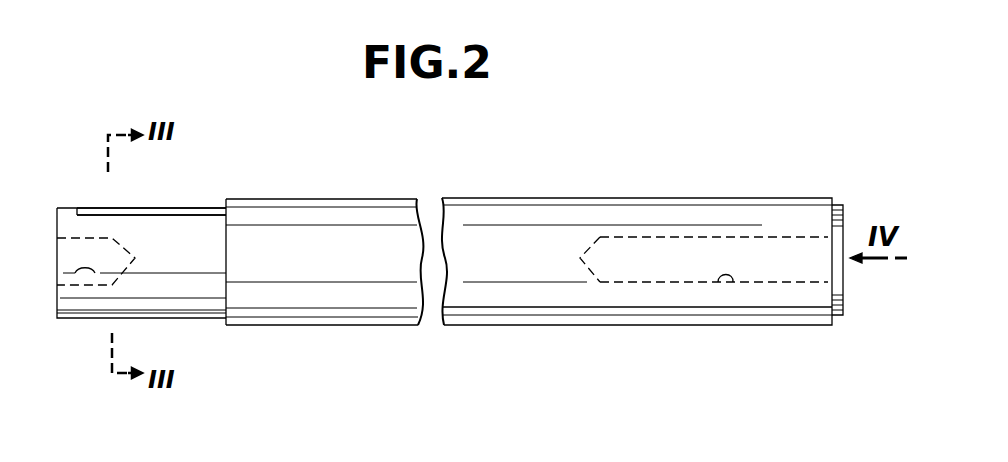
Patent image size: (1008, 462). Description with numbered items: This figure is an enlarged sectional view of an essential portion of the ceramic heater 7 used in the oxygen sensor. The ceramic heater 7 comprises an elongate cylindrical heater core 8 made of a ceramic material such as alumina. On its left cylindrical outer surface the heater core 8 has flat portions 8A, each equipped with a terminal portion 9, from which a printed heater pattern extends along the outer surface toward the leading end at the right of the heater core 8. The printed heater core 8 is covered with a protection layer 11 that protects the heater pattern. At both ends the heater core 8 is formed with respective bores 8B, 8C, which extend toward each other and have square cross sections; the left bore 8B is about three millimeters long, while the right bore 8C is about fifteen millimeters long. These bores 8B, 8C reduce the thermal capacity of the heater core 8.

The ceramic heater 7 is at (638, 192).
The heater core 8 is at (197, 292).
The flat portion 8A is at (77, 208).
The left bore 8B is at (95, 273).
The right bore 8C is at (733, 282).
The terminal portion 9 is at (198, 208).
The protection layer 11 is at (537, 297).